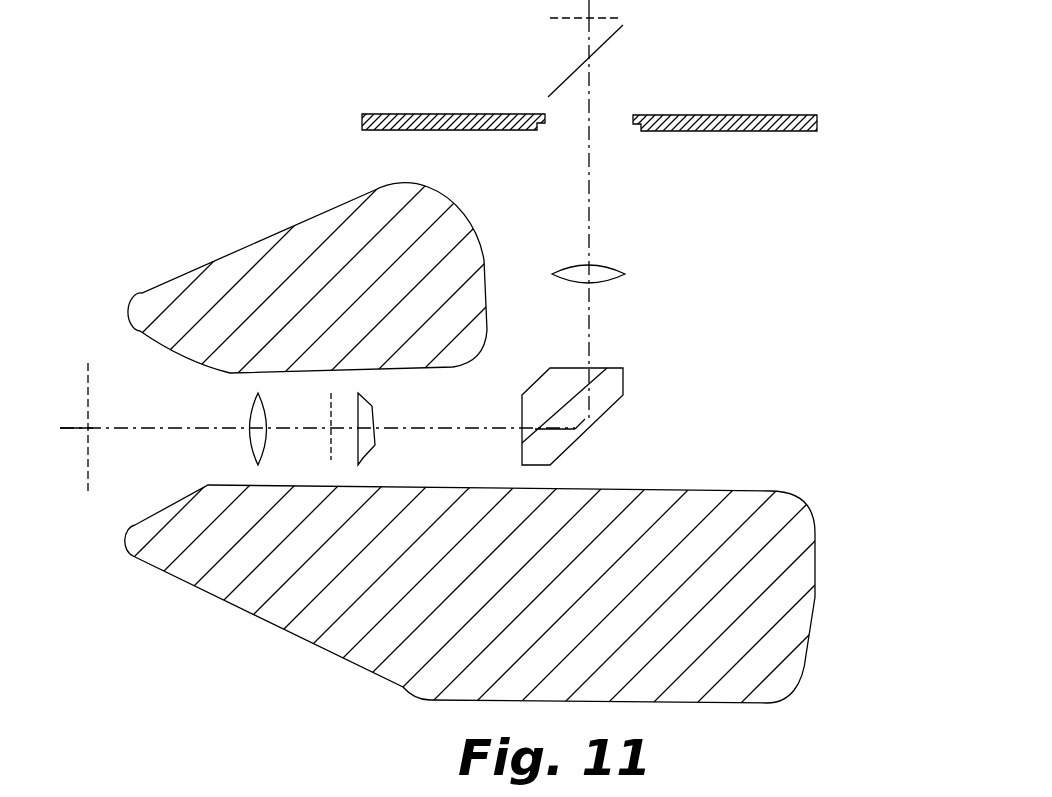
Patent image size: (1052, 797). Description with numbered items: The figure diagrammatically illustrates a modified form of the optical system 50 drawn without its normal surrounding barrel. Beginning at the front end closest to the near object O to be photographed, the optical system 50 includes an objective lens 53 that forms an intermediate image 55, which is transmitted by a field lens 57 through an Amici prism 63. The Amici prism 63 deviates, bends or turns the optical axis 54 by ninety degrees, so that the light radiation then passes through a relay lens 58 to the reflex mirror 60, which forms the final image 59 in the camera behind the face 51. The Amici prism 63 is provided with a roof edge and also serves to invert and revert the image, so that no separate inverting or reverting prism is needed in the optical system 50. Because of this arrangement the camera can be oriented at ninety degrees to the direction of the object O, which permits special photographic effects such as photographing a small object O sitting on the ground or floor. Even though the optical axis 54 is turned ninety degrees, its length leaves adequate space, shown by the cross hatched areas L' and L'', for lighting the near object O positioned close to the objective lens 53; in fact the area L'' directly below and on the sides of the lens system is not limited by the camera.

The optical system 50 is at (636, 335).
The face 51 is at (678, 132).
The objective lens 53 is at (252, 443).
The optical axis 54 is at (420, 427).
The intermediate image 55 is at (330, 448).
The field lens 57 is at (375, 447).
The relay lens 58 is at (617, 270).
The final image 59 is at (573, 22).
The reflex mirror 60 is at (610, 40).
The Amici prism 63 is at (601, 418).
The cross hatched area L' is at (396, 396).
The cross hatched area L'' is at (526, 398).
The near object O is at (90, 381).